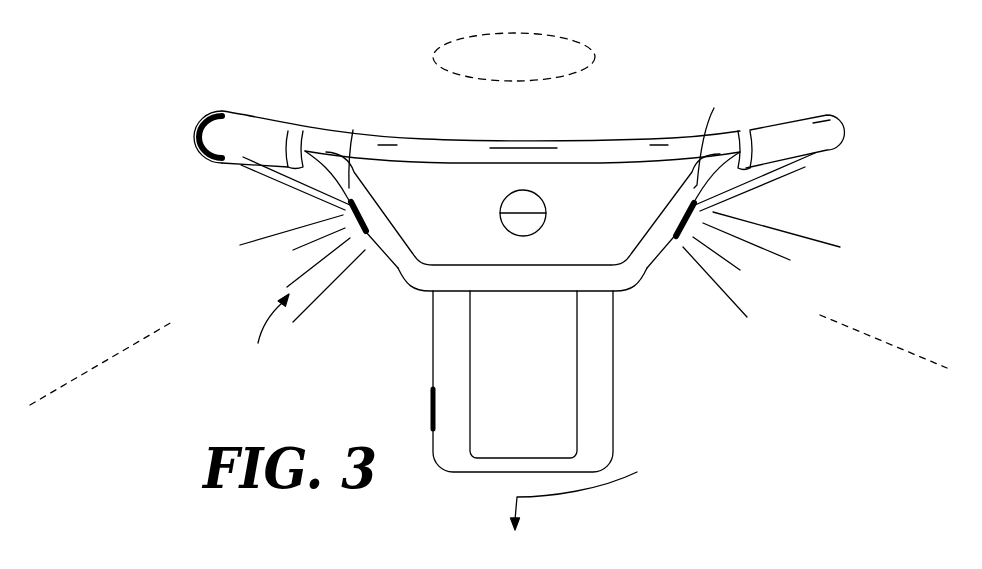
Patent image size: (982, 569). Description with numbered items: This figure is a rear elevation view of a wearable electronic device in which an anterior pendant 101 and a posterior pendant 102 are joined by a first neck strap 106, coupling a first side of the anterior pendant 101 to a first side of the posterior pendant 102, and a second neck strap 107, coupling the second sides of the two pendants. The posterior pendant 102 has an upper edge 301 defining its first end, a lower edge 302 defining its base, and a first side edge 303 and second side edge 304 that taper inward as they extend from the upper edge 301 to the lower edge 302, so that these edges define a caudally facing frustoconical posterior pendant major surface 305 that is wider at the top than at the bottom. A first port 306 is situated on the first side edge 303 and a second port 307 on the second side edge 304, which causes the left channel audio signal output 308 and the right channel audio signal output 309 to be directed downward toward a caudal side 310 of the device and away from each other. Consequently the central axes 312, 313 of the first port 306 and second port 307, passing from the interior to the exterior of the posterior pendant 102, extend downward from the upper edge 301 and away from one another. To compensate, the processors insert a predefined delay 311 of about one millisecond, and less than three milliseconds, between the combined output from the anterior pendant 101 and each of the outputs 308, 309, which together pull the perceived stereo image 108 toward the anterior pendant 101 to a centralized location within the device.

The anterior pendant 101 is at (613, 365).
The posterior pendant 102 is at (638, 282).
The first neck strap 106 is at (263, 133).
The second neck strap 107 is at (798, 136).
The stereo image 108 is at (519, 34).
The upper edge 301 is at (580, 152).
The lower edge 302 is at (490, 276).
The first side edge 303 is at (353, 130).
The second side edge 304 is at (714, 108).
The frustoconical posterior pendant major surface 305 is at (608, 209).
The first port 306 is at (368, 228).
The second port 307 is at (683, 223).
The left channel audio signal output 308 is at (257, 326).
The right channel audio signal output 309 is at (798, 224).
The caudal side 310 is at (581, 488).
The predefined delay 311 is at (227, 270).
The central axis 312 is at (113, 357).
The central axis 313 is at (858, 330).